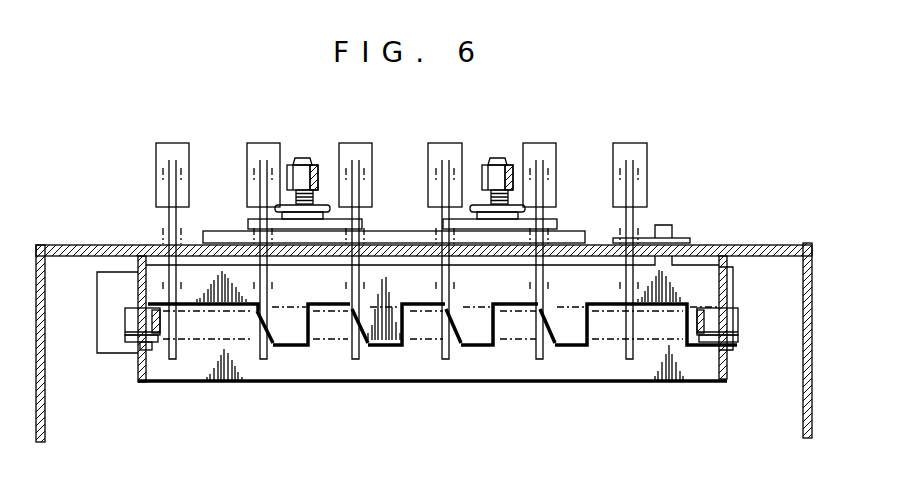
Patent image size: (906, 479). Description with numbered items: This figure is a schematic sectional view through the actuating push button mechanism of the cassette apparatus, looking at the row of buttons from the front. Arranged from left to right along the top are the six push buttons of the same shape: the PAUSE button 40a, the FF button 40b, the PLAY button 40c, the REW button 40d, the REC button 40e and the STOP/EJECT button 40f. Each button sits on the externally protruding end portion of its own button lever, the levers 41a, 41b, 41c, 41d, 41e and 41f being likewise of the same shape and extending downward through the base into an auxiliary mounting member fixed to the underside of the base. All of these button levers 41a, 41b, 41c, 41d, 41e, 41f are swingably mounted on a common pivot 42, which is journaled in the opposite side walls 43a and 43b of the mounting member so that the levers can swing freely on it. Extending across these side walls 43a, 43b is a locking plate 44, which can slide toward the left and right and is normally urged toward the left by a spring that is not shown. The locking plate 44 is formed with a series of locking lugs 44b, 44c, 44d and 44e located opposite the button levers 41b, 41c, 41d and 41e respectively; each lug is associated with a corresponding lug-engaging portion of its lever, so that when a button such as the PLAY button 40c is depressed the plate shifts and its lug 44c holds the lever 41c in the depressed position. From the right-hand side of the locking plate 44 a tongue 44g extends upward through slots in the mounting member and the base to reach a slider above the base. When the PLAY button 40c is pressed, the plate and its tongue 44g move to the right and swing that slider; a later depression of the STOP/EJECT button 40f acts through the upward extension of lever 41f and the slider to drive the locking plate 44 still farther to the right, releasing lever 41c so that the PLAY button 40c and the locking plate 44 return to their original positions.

The PAUSE button 40a is at (172, 143).
The FF button 40b is at (264, 143).
The PLAY button 40c is at (356, 143).
The REW button 40d is at (446, 143).
The REC button 40e is at (540, 143).
The STOP/EJECT button 40f is at (630, 143).
The button lever 41a is at (172, 359).
The button lever 41b is at (264, 359).
The button lever 41c is at (356, 359).
The button lever 41d is at (446, 359).
The button lever 41e is at (540, 359).
The button lever 41f is at (630, 359).
The common pivot 42 is at (125, 322).
The side wall 43a is at (138, 374).
The side wall 43b is at (727, 360).
The locking plate 44 is at (106, 293).
The locking lug 44b is at (253, 311).
The locking lug 44c is at (348, 309).
The locking lug 44d is at (442, 309).
The locking lug 44e is at (537, 309).
The tongue 44g is at (665, 225).